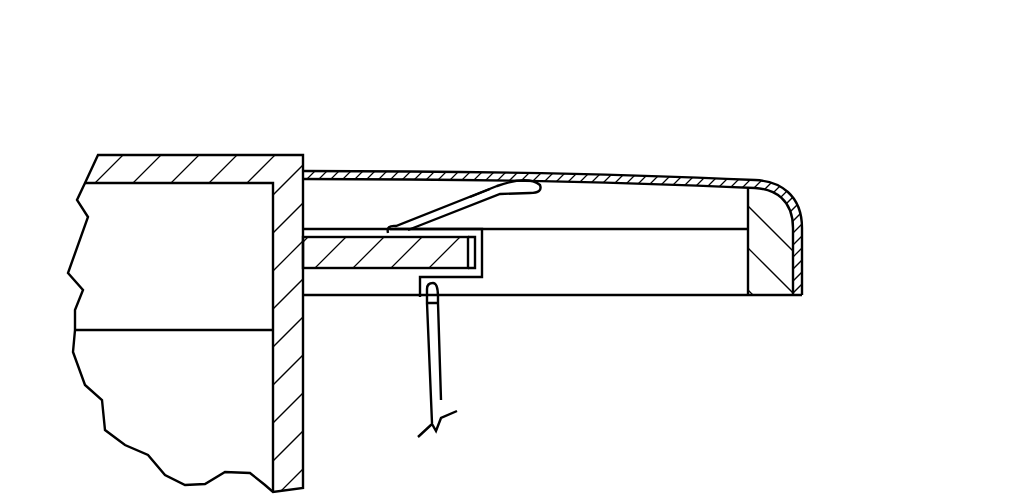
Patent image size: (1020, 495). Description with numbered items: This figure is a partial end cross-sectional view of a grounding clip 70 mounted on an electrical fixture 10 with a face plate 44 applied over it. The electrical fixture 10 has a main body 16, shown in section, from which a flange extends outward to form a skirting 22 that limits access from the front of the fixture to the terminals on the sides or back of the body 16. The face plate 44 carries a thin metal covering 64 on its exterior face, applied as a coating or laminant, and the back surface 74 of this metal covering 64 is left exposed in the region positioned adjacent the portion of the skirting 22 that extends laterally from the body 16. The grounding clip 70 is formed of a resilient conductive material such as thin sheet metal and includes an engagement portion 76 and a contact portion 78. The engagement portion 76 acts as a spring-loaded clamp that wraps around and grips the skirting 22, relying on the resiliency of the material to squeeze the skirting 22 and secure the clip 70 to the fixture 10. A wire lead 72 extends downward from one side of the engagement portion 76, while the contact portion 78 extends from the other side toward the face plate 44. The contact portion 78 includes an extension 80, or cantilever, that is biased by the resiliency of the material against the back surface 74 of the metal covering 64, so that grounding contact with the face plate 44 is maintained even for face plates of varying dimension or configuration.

The electrical fixture 10 is at (286, 138).
The main body 16 is at (180, 167).
The skirting 22 is at (387, 258).
The face plate 44 is at (786, 176).
The metal covering 64 is at (675, 183).
The grounding clip 70 is at (498, 280).
The wire lead 72 is at (442, 380).
The back surface 74 is at (634, 192).
The engagement portion 76 is at (461, 300).
The contact portion 78 is at (509, 206).
The extension 80 is at (478, 188).